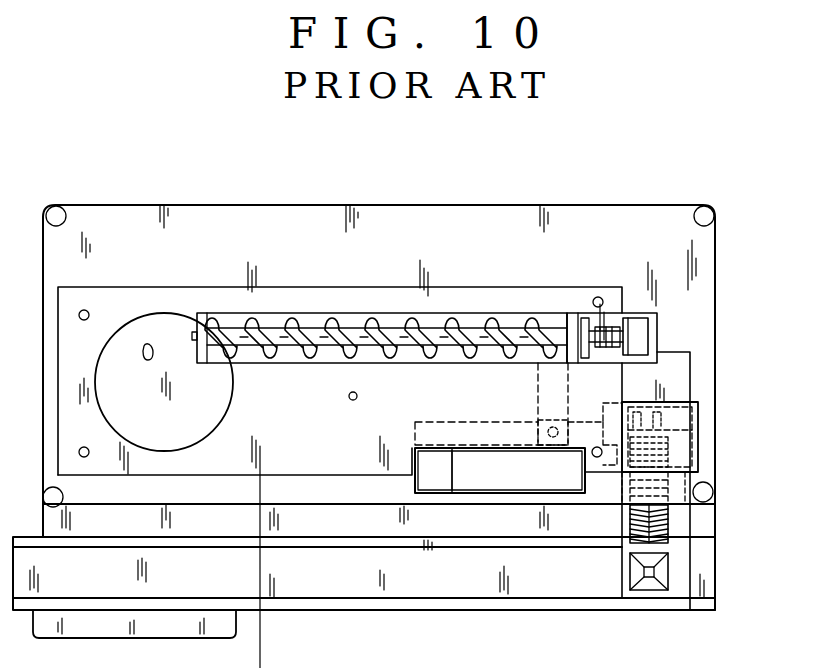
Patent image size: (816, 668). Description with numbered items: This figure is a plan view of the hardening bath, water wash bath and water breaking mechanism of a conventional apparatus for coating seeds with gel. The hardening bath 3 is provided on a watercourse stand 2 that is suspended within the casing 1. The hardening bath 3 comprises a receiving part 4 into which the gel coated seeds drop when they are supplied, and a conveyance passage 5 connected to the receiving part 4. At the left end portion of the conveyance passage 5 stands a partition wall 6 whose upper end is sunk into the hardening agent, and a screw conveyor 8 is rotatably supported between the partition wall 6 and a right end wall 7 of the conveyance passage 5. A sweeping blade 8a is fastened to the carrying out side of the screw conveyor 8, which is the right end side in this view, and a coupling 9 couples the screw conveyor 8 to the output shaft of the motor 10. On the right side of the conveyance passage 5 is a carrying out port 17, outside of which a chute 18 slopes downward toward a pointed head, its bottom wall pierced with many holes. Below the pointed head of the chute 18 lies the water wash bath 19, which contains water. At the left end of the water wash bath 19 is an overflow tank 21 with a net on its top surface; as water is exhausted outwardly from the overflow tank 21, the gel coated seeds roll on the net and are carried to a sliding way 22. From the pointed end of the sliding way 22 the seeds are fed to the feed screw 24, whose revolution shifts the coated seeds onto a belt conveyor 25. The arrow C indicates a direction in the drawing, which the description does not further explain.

The casing 1 is at (283, 207).
The watercourse stand 2 is at (478, 300).
The hardening bath 3 is at (361, 300).
The receiving part 4 is at (160, 314).
The conveyance passage 5 is at (432, 318).
The partition wall 6 is at (200, 316).
The right end wall 7 is at (573, 316).
The screw conveyor 8 is at (290, 318).
The sweeping blade 8a is at (564, 317).
The coupling 9 is at (598, 352).
The motor 10 is at (650, 330).
The carrying out port 17 is at (565, 362).
The chute 18 is at (537, 403).
The water wash bath 19 is at (483, 497).
The overflow tank 21 is at (432, 495).
The sliding way 22 is at (430, 432).
The feed screw 24 is at (668, 518).
The belt conveyor 25 is at (590, 587).
The rotation direction C is at (724, 477).